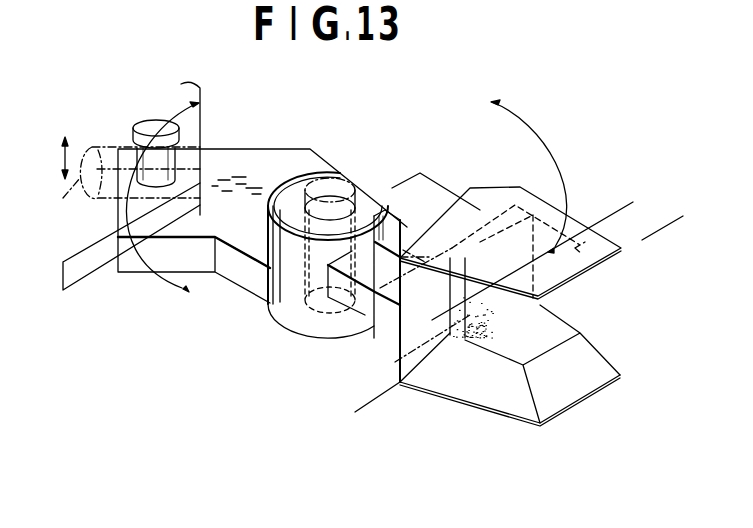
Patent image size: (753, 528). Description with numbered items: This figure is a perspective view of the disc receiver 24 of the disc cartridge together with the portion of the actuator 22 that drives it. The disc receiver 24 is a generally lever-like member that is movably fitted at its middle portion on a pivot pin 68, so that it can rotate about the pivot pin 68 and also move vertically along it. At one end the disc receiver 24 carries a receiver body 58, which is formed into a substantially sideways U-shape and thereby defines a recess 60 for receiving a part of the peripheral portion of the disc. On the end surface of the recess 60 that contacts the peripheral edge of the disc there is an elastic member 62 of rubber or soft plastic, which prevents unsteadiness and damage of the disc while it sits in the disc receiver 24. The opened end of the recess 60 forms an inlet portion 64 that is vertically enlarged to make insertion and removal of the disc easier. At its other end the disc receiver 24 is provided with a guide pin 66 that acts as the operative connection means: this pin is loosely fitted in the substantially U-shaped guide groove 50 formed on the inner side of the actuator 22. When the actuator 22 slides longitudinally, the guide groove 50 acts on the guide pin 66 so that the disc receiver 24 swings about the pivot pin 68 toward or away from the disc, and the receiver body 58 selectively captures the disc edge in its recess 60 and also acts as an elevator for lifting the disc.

The actuator 22 is at (90, 289).
The disc receiver 24 is at (256, 149).
The guide groove 50 is at (125, 184).
The receiver body 58 is at (380, 342).
The recess 60 is at (605, 308).
The elastic member 62 is at (500, 313).
The inlet portion 64 is at (575, 378).
The guide pin 66 is at (150, 123).
The pivot pin 68 is at (350, 172).